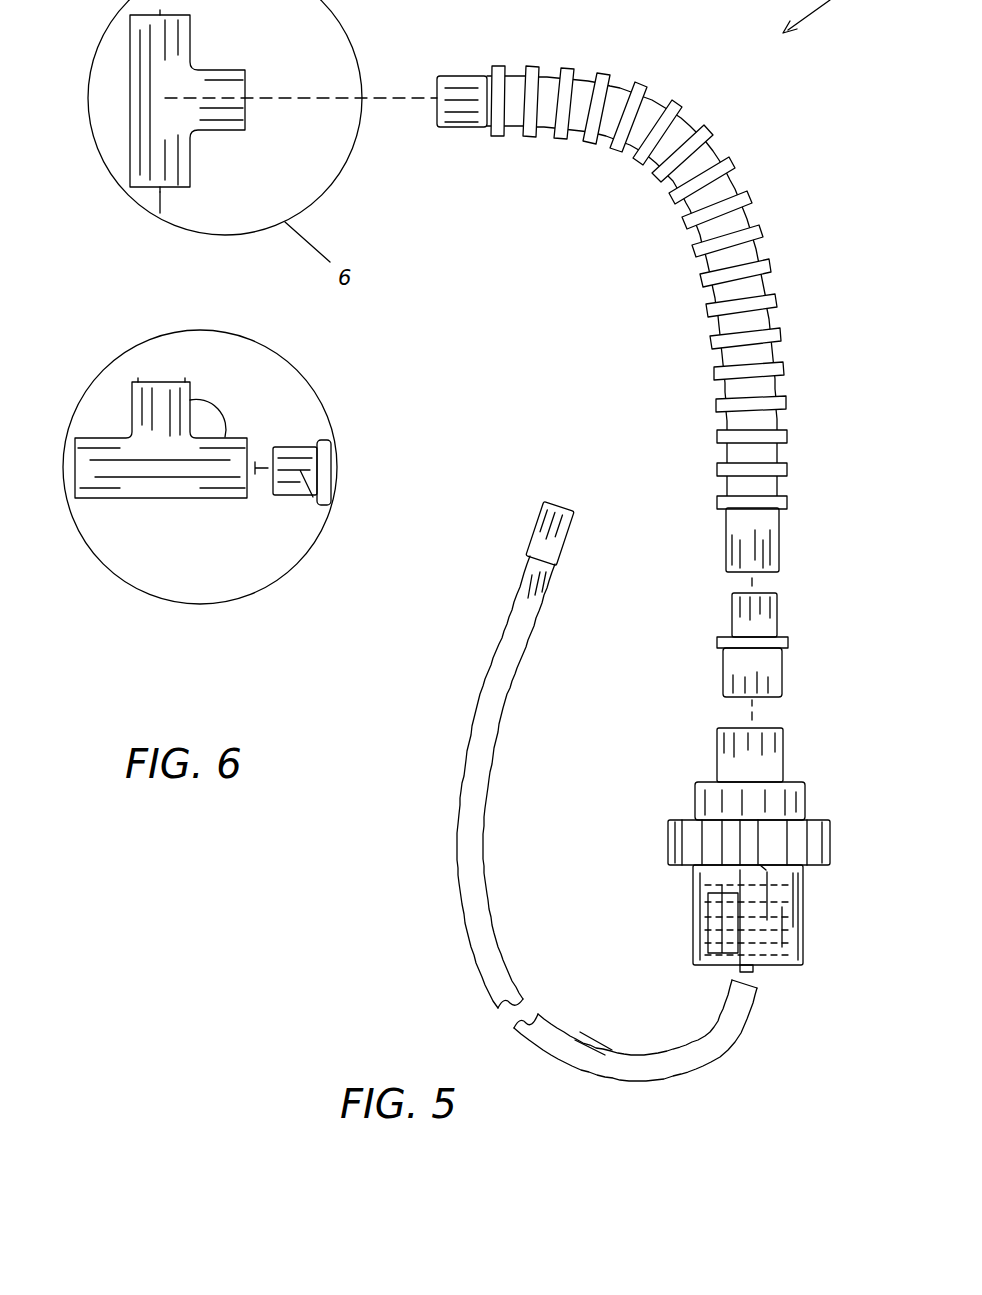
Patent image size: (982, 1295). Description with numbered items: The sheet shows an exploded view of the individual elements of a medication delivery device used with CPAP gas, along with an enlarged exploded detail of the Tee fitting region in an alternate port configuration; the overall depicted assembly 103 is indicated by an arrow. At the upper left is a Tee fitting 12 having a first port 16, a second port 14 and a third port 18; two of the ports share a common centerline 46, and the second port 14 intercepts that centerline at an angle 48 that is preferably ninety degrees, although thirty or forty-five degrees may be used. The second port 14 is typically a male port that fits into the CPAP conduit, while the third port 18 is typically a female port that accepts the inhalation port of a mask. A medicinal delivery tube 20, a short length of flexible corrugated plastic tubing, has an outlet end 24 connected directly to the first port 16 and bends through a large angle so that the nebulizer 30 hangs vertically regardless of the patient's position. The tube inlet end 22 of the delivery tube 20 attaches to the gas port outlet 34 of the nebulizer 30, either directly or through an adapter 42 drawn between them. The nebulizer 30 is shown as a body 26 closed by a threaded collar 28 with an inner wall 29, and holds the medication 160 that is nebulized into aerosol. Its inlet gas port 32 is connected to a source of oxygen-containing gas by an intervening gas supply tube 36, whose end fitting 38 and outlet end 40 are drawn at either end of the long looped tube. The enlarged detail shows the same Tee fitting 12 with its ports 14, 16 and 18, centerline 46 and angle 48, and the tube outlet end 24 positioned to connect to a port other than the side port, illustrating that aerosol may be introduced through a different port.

In FIG. 5, the Tee fitting 12 is at (415, 14).
In FIG. 6, the Tee fitting 12 is at (153, 468).
In FIG. 5, the second port 14 is at (245, 96).
In FIG. 6, the second port 14 is at (248, 490).
In FIG. 5, the first port 16 is at (252, 84).
In FIG. 6, the first port 16 is at (148, 382).
In FIG. 6, the third port 18 is at (75, 462).
In FIG. 5, the medicinal delivery tube 20 is at (730, 196).
In FIG. 5, the tube inlet end 22 is at (752, 552).
In FIG. 5, the outlet end 24 is at (486, 132).
In FIG. 6, the outlet end 24 is at (318, 500).
In FIG. 5, the fluid container body 26 is at (745, 879).
In FIG. 5, the threaded nut 28 is at (697, 845).
In FIG. 5, the inner wall 29 is at (765, 865).
In FIG. 5, the nebulizer 30 is at (719, 867).
In FIG. 5, the inlet gas port 32 is at (678, 980).
In FIG. 5, the gas port outlet 34 is at (735, 768).
In FIG. 5, the gas supply tube 36 is at (500, 982).
In FIG. 5, the tube end fitting 38 is at (548, 542).
In FIG. 5, the tube outlet end 40 is at (747, 993).
In FIG. 5, the adapter 42 is at (753, 660).
In FIG. 5, the centerline 46 is at (160, 207).
In FIG. 6, the centerline 46 is at (255, 468).
In FIG. 6, the angle 48 is at (215, 408).
In FIG. 5, the fluid delivery system 103 is at (573, 467).
In FIG. 5, the medication 160 is at (727, 873).